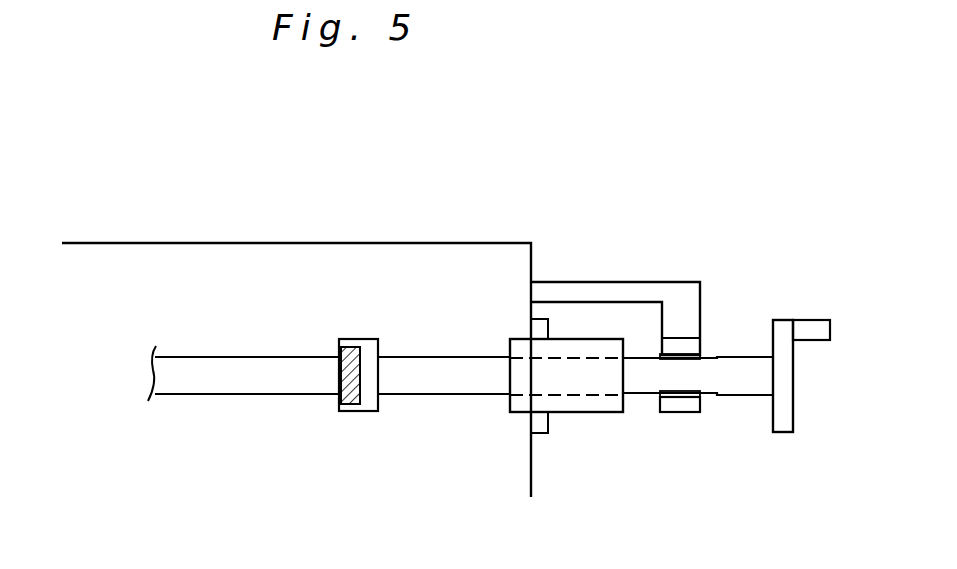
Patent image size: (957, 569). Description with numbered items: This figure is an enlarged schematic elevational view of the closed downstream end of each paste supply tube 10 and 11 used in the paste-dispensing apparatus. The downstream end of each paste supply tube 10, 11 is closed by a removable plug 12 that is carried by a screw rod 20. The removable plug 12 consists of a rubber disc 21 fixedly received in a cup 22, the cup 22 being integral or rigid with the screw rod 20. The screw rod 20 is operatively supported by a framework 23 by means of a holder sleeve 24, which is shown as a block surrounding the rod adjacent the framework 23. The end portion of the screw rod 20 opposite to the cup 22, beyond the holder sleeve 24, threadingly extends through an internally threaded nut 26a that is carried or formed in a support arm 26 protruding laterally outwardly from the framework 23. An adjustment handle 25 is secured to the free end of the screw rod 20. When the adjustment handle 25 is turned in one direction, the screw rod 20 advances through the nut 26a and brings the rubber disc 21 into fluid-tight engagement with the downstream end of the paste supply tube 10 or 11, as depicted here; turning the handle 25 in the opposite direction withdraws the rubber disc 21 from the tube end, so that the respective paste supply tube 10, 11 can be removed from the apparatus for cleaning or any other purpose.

The paste supply tube 10 is at (280, 394).
The paste supply tube 11 is at (329, 412).
The removable plug 12 is at (357, 418).
The screw rod 20 is at (693, 377).
The rubber disc 21 is at (347, 346).
The cup 22 is at (370, 404).
The framework 23 is at (505, 243).
The holder sleeve 24 is at (588, 405).
The adjustment handle 25 is at (781, 319).
The support arm 26 is at (630, 283).
The internally threaded nut 26a is at (683, 355).